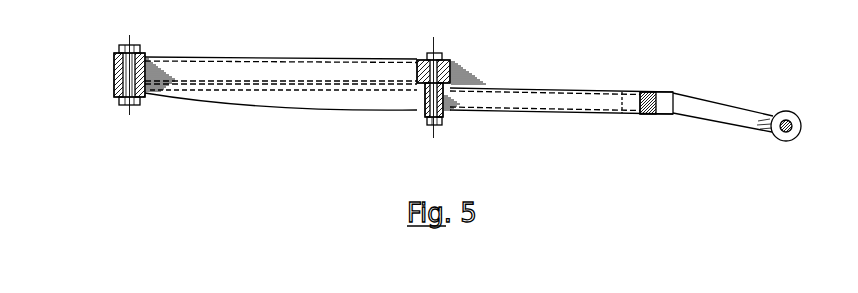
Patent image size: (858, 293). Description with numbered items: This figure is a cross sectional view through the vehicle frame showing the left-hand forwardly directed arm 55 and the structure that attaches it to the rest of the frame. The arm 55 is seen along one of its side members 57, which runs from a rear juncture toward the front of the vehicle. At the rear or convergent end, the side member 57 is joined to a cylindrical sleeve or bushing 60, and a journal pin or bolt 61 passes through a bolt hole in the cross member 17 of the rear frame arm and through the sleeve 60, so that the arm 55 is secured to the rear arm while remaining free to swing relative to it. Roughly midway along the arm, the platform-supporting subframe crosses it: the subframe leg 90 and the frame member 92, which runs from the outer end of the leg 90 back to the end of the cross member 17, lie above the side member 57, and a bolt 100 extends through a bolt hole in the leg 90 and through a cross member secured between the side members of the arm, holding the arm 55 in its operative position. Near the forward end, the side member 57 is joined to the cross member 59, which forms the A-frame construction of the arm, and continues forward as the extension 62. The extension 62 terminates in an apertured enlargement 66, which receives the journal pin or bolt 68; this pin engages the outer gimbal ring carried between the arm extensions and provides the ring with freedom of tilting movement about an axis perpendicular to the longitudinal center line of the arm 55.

The cross member 17 is at (115, 64).
The forwardly directed arm 55 is at (281, 112).
The side member 57 is at (590, 90).
The cross member 59 is at (652, 116).
The cylindrical sleeve or bushing 60 is at (115, 87).
The journal pin or bolt 61 is at (129, 45).
The extension 62 is at (700, 100).
The apertured enlargement 66 is at (792, 113).
The journal pin or bolt 68 is at (793, 137).
The leg 90 is at (456, 70).
The frame member 92 is at (234, 58).
The bolt 100 is at (430, 53).